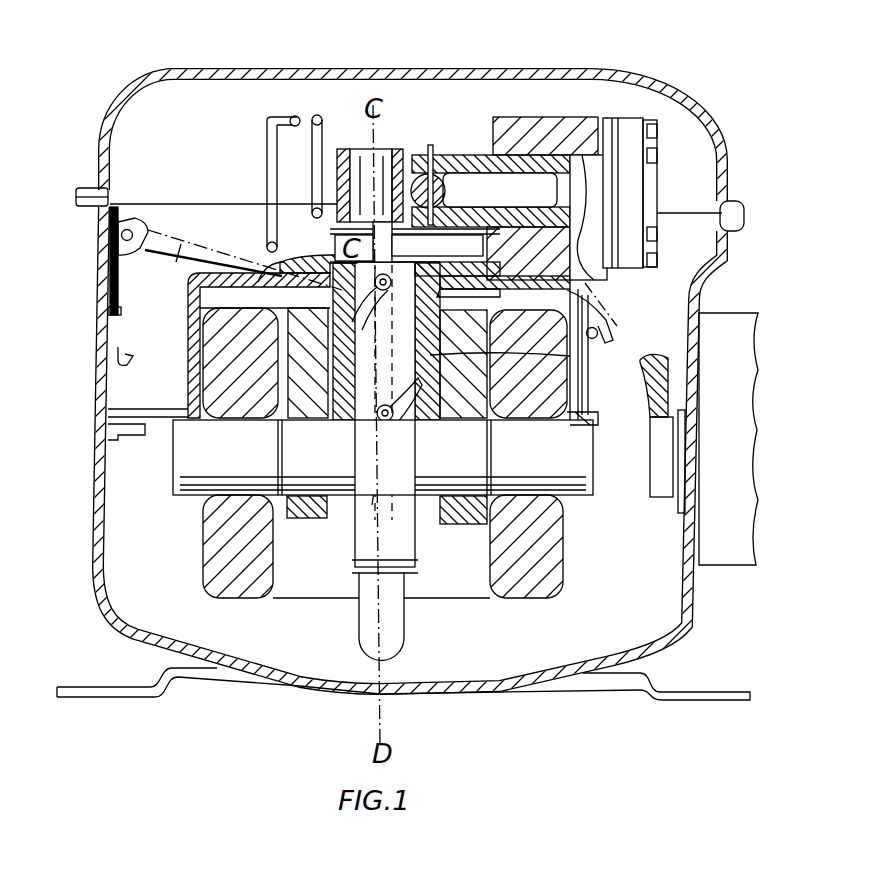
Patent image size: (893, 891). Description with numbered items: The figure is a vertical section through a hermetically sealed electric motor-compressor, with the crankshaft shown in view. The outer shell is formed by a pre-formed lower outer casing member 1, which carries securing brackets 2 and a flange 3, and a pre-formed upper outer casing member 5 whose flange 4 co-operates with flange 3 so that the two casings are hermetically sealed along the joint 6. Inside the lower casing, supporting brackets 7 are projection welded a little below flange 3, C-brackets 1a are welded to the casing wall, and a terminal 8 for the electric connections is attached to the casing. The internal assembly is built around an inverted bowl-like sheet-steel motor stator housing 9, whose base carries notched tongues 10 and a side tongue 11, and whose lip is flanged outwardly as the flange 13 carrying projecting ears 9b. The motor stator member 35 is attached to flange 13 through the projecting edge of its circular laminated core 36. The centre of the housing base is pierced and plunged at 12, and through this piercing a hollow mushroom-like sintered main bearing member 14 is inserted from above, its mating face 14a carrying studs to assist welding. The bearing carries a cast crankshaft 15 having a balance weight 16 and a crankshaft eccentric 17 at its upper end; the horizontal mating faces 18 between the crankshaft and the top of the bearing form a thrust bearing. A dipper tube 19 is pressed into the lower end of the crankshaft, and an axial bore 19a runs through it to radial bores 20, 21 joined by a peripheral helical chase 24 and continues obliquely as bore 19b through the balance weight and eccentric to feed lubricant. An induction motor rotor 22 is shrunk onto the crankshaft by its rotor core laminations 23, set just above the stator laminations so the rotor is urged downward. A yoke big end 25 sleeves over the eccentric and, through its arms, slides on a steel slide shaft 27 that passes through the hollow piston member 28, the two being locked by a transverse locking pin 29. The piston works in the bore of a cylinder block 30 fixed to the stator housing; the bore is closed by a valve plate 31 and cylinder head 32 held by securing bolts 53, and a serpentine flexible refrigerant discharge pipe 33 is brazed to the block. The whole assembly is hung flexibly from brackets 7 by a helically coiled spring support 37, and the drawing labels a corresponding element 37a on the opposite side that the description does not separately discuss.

The lower outer casing member 1 is at (107, 352).
The C-brackets 1a is at (108, 430).
The securing brackets 2 is at (104, 690).
The flange 3 is at (108, 228).
The flange 4 is at (88, 192).
The upper outer casing member 5 is at (136, 92).
The joint 6 is at (167, 203).
The supporting brackets 7 is at (112, 254).
The terminal 8 is at (688, 426).
The motor stator housing 9 is at (190, 353).
The projecting ears 9b is at (108, 411).
The notched tongues 10 is at (266, 264).
The notched and raised tongue 11 is at (610, 336).
The plunged piercing 12 is at (318, 268).
The flange 13 is at (594, 420).
The main bearing member 14 is at (572, 368).
The mating face 14a is at (502, 288).
The crankshaft 15 is at (385, 417).
The balance weight 16 is at (507, 214).
The crankshaft eccentric 17 is at (370, 148).
The horizontal mating faces 18 is at (450, 258).
The dipper tube 19 is at (400, 632).
The axial bore 19a is at (370, 520).
The oblique bore 19b is at (393, 150).
The radial bore 20 is at (400, 440).
The radial bore 21 is at (342, 264).
The induction motor rotor 22 is at (300, 388).
The rotor core laminations 23 is at (307, 413).
The peripheral helical chase 24 is at (395, 422).
The yoke big end 25 is at (327, 118).
The slide shaft 27 is at (442, 176).
The piston member 28 is at (588, 138).
The locking pin 29 is at (432, 146).
The cylinder block 30 is at (553, 130).
The valve plate 31 is at (640, 120).
The cylinder head 32 is at (656, 148).
The refrigerant discharge pipe 33 is at (268, 148).
The motor stator member 35 is at (216, 554).
The laminated core 36 is at (383, 457).
The spring support 37 is at (176, 262).
The spring axis 37a is at (612, 292).
The securing bolts 53 is at (657, 246).